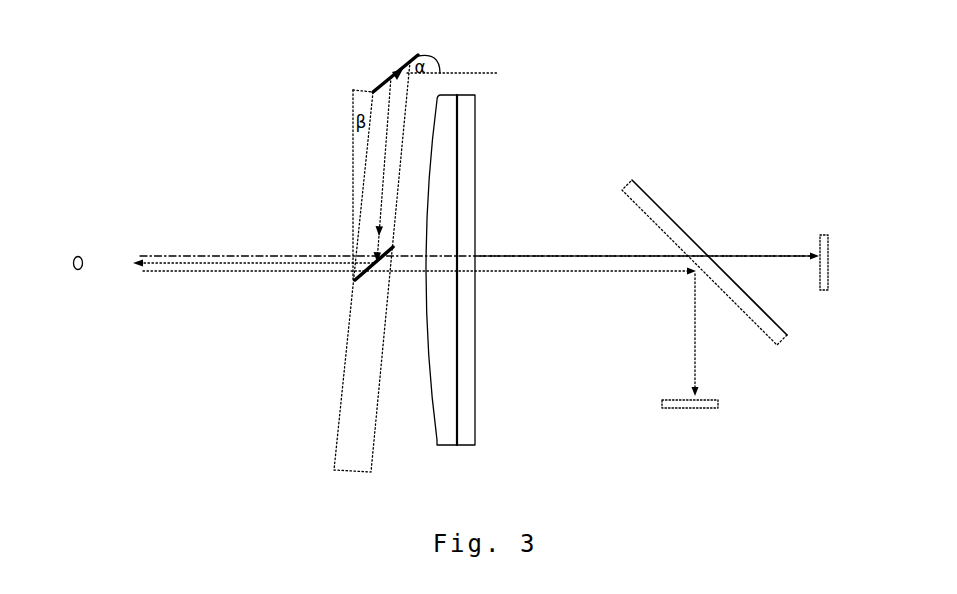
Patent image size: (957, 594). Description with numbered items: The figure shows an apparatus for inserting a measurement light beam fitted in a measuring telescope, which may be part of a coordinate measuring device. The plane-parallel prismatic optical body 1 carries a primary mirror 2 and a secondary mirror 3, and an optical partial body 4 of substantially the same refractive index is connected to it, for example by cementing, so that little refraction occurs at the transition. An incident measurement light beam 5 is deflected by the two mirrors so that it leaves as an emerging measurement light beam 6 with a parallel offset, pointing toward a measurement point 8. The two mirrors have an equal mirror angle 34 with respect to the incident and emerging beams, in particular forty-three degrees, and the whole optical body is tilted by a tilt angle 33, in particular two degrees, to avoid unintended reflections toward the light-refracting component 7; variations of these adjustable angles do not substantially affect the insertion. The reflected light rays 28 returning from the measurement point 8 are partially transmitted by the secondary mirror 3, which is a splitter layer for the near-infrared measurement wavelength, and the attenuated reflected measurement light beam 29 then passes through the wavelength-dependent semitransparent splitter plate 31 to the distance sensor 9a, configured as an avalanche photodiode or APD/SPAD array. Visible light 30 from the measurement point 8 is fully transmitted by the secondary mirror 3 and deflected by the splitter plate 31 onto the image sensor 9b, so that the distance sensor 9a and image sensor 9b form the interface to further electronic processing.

The optical body 1 is at (398, 101).
The primary mirror 2 is at (433, 48).
The secondary mirror 3 is at (388, 235).
The optical partial body 4 is at (352, 450).
The incident measurement light beam 5 is at (447, 73).
The emerging measurement light beam 6 is at (250, 265).
The light-refracting component 7 is at (465, 237).
The measurement point 8 is at (73, 257).
The distance sensor 9a is at (830, 247).
The image sensor 9b is at (707, 400).
The reflected light rays 28 is at (145, 255).
The reflected measurement light beam 29 is at (542, 253).
The light in the visible wavelength range 30 is at (195, 272).
The wavelength-dependent semitransparent splitter plate 31 is at (657, 203).
The angle β 33 is at (354, 106).
The angle α 34 is at (417, 55).